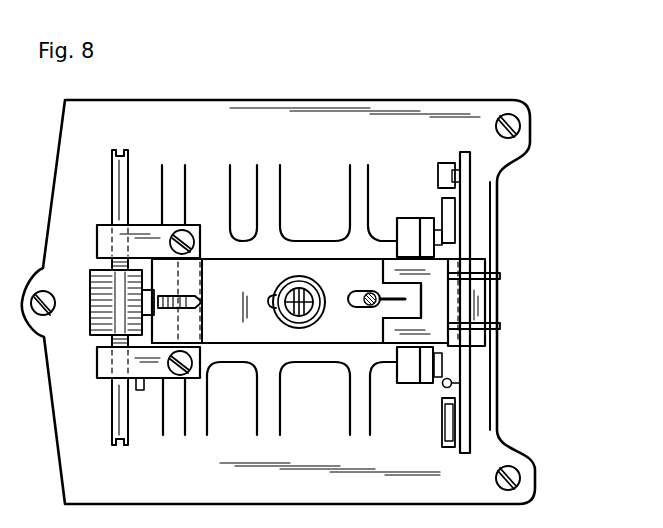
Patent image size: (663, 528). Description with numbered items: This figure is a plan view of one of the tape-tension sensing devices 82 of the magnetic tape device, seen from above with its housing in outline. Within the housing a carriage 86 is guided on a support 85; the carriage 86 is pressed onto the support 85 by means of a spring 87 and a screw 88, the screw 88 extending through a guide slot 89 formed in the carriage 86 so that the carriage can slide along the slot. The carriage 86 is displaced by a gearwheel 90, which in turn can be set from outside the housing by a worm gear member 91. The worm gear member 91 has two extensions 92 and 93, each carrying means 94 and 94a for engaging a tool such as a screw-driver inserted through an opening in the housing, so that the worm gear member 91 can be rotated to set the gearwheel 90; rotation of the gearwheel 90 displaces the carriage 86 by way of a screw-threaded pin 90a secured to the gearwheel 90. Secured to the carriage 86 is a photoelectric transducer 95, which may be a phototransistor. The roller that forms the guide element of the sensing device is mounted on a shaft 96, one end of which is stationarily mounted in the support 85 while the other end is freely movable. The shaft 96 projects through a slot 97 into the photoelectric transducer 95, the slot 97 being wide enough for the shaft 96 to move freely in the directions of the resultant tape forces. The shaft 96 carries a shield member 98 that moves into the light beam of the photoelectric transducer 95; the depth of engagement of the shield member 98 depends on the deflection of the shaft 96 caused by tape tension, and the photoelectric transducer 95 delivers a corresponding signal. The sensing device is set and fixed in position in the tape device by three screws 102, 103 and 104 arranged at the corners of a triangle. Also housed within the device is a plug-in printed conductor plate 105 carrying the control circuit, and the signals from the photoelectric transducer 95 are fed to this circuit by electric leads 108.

The sensing device 82 is at (286, 100).
The support 85 is at (217, 240).
The carriage 86 is at (264, 358).
The spring 87 is at (311, 346).
The screw 88 is at (292, 278).
The guide slot 89 is at (268, 304).
The gearwheel 90 is at (92, 290).
The screw-threaded pin 90a is at (143, 352).
The worm gear member 91 is at (92, 340).
The extension 92 is at (112, 176).
The extension 93 is at (112, 434).
The tool engaging means 94 is at (120, 150).
The tool engaging means 94a is at (120, 446).
The photoelectric transducer 95 is at (417, 348).
The shaft 96 is at (353, 292).
The slot 97 is at (397, 241).
The shield member 98 is at (408, 301).
The screw 102 is at (44, 318).
The screw 103 is at (520, 126).
The screw 104 is at (512, 470).
The printed conductor plate 105 is at (470, 376).
The electric lead 108 is at (502, 276).